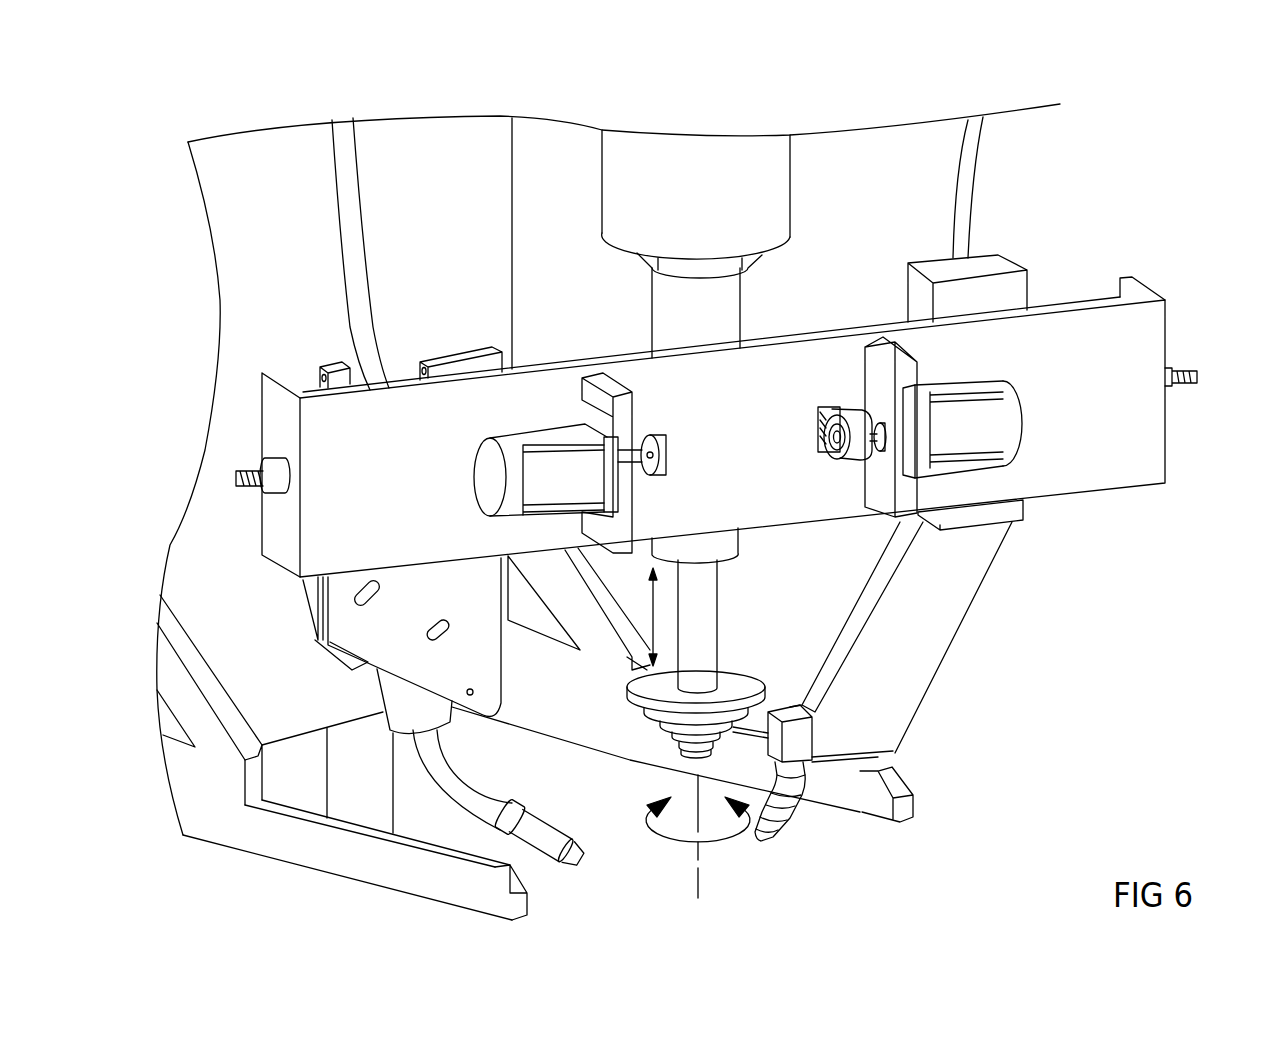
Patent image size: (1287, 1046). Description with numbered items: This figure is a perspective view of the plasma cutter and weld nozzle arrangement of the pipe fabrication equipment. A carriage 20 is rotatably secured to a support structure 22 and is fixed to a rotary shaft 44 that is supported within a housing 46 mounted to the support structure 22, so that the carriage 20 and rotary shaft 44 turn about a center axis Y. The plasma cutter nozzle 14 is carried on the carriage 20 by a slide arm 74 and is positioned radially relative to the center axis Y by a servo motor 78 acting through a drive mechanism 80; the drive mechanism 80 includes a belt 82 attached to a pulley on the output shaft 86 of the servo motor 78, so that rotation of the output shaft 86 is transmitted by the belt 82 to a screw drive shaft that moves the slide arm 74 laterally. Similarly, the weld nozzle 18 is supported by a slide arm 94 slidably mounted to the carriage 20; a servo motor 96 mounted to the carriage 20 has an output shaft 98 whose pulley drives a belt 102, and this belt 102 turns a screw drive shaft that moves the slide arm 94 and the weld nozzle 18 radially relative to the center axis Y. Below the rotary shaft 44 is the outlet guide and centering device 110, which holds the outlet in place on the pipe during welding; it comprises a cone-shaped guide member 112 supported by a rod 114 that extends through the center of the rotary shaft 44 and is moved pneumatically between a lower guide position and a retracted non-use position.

The plasma cutter nozzle 14 is at (770, 833).
The weld nozzle 18 is at (565, 828).
The carriage 20 is at (1157, 295).
The support structure 22 is at (285, 254).
The rotary shaft 44 is at (732, 540).
The housing 46 is at (782, 168).
The slide arm 74 is at (953, 618).
The servo motor 78 is at (1013, 393).
The drive mechanism 80 is at (819, 420).
The belt 82 is at (833, 408).
The output shaft 86 is at (873, 422).
The slide arm 94 is at (348, 630).
The servo motor 96 is at (480, 463).
The output shaft 98 is at (640, 485).
The belt 102 is at (642, 438).
The outlet guide and centering device 110 is at (640, 721).
The cone-shaped guide member 112 is at (640, 713).
The rod 114 is at (707, 603).
The center axis Y is at (698, 875).